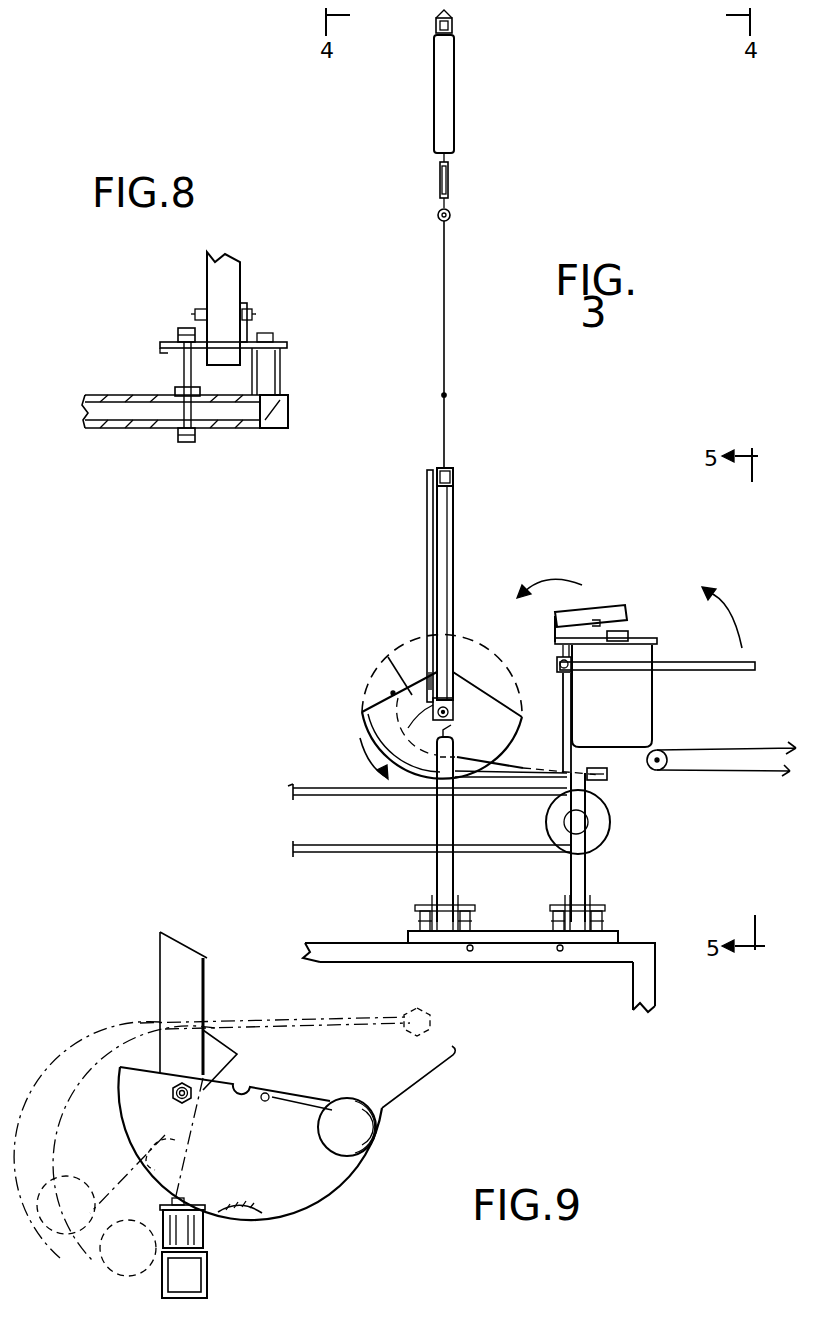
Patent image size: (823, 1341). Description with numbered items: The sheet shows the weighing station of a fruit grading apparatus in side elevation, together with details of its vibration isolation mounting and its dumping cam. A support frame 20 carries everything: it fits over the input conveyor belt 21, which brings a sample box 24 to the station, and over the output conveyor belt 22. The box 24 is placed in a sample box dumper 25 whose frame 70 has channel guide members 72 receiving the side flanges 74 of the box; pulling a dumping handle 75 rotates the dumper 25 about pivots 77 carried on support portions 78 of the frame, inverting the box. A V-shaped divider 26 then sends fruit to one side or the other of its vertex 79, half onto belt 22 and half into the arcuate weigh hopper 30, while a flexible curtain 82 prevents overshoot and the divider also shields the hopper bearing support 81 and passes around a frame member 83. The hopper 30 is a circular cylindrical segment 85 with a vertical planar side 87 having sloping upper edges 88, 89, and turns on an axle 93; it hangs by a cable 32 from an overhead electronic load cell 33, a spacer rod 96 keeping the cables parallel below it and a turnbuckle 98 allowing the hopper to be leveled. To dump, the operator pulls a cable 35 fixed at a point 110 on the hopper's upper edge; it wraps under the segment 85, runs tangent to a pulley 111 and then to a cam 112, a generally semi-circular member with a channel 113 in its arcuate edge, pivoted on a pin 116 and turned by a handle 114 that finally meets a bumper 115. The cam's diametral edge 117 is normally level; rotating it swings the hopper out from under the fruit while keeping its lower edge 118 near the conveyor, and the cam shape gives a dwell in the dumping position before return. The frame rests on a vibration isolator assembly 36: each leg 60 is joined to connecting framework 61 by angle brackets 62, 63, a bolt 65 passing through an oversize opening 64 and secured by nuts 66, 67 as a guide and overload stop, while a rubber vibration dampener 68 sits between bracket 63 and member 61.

In FIG. 3, the support frame 20 is at (452, 22).
In FIG. 8, the support frame 20 is at (216, 268).
In FIG. 9, the support frame 20 is at (173, 958).
In FIG. 3, the input conveyor belt 21 is at (712, 745).
In FIG. 3, the output conveyor belt 22 is at (292, 790).
In FIG. 3, the sample box 24 is at (632, 739).
In FIG. 3, the sample box dumper 25 is at (552, 645).
In FIG. 3, the divider 26 is at (615, 612).
In FIG. 3, the weigh hopper 30 is at (388, 657).
In FIG. 3, the cable 32 is at (445, 263).
In FIG. 3, the electronic load cell 33 is at (448, 105).
In FIG. 3, the cable 35 is at (415, 775).
In FIG. 9, the cable 35 is at (420, 1088).
In FIG. 3, the vibration isolator assembly 36 is at (406, 920).
In FIG. 8, the vibration isolator assembly 36 is at (150, 285).
In FIG. 3, the leg 60 is at (585, 870).
In FIG. 8, the leg 60 is at (232, 278).
In FIG. 9, the leg 60 is at (162, 983).
In FIG. 8, the connecting framework 61 is at (277, 412).
In FIG. 8, the angle bracket 62 is at (203, 307).
In FIG. 8, the angle bracket 63 is at (248, 323).
In FIG. 8, the oversize opening 64 is at (180, 356).
In FIG. 3, the bolt 65 is at (466, 923).
In FIG. 8, the bolt 65 is at (185, 372).
In FIG. 8, the nut 66 is at (183, 397).
In FIG. 8, the nut 67 is at (181, 443).
In FIG. 3, the rubber vibration dampener 68 is at (420, 920).
In FIG. 8, the rubber vibration dampener 68 is at (272, 368).
In FIG. 3, the frame of the dumper 70 is at (537, 627).
In FIG. 3, the channel guide member 72 is at (622, 636).
In FIG. 3, the side flange 74 is at (660, 648).
In FIG. 3, the dumping handle 75 is at (738, 671).
In FIG. 3, the pivot 77 is at (575, 672).
In FIG. 3, the support portion 78 is at (568, 733).
In FIG. 3, the vertex 79 is at (593, 612).
In FIG. 3, the bearing support 81 is at (405, 725).
In FIG. 3, the flexible curtain 82 is at (427, 500).
In FIG. 3, the frame member 83 is at (452, 535).
In FIG. 3, the circular cylindrical segment 85 is at (365, 740).
In FIG. 3, the vertical planar side 87 is at (503, 739).
In FIG. 3, the sloping upper edge 88 is at (475, 683).
In FIG. 3, the sloping upper edge 89 is at (393, 693).
In FIG. 3, the axle 93 is at (451, 732).
In FIG. 3, the spacer rod 96 is at (447, 395).
In FIG. 3, the suspension turnbuckle 98 is at (445, 172).
In FIG. 3, the attachment point 110 is at (360, 713).
In FIG. 3, the pulley 111 is at (612, 777).
In FIG. 9, the cam 112 is at (262, 1171).
In FIG. 9, the channel 113 is at (255, 1215).
In FIG. 9, the handle 114 is at (376, 1140).
In FIG. 9, the bumper 115 is at (190, 1232).
In FIG. 9, the pin 116 is at (187, 1082).
In FIG. 9, the diametral edge 117 is at (262, 1090).
In FIG. 3, the lower edge 118 is at (362, 700).